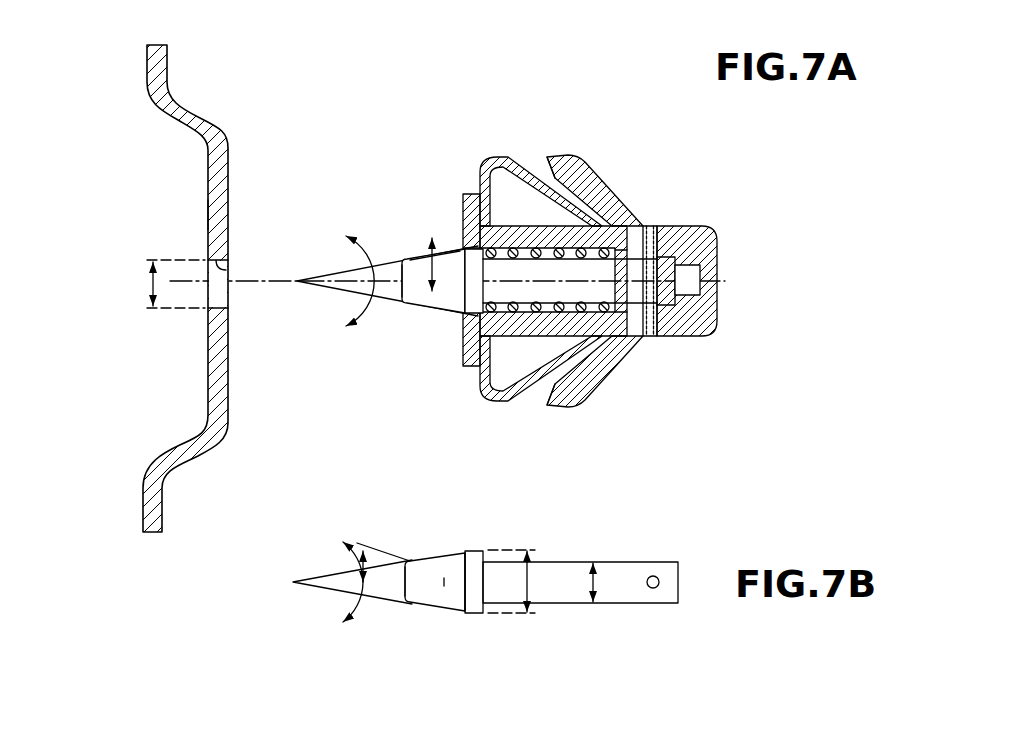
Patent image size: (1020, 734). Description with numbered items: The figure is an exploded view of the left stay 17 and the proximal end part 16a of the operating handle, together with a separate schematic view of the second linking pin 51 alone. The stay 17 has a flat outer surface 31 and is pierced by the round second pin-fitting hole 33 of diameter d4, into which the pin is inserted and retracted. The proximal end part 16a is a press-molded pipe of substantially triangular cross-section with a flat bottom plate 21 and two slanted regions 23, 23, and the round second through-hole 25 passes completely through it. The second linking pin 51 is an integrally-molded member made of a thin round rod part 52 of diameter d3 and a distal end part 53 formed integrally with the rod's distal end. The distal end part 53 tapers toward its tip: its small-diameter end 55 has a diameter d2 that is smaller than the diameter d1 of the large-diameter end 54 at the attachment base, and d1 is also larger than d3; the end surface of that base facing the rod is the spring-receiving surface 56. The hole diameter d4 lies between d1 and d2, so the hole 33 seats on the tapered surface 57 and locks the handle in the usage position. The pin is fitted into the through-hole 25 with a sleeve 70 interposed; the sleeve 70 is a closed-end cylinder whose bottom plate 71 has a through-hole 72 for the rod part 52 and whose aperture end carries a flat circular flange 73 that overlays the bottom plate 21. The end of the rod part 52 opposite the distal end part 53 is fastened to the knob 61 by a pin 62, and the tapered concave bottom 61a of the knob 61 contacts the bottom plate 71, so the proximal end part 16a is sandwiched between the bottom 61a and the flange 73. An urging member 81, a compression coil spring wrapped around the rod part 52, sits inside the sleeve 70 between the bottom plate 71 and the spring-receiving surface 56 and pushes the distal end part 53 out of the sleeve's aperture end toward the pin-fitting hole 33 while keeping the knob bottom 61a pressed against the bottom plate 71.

In FIG. 7A, the left stay 17 is at (206, 116).
In FIG. 7A, the surface of the left stay 31 is at (228, 202).
In FIG. 7A, the second pin-fitting hole 33 is at (228, 265).
In FIG. 7A, the diameter of the second pin-fitting hole d4 is at (160, 284).
In FIG. 7A, the flange 73 is at (464, 212).
In FIG. 7A, the left proximal end part 16a is at (497, 156).
In FIG. 7A, the bottom plate 21 is at (481, 185).
In FIG. 7A, the slanted regions 23 is at (535, 162).
In FIG. 7A, the second through-hole 25 is at (511, 160).
In FIG. 7A, the knob 61 is at (620, 180).
In FIG. 7A, the bottom of the knob 61a is at (586, 200).
In FIG. 7A, the bottom plate of the sleeve 71 is at (608, 352).
In FIG. 7A, the sleeve 70 is at (580, 392).
In FIG. 7A, the through-hole 72 is at (633, 325).
In FIG. 7A, the urging member 81 is at (648, 237).
In FIG. 7A, the pin 62 is at (705, 233).
In FIG. 7A, the second linking pin 51 is at (568, 286).
In FIG. 7B, the second linking pin 51 is at (485, 585).
In FIG. 7A, the rod part 52 is at (708, 330).
In FIG. 7B, the rod part 52 is at (558, 558).
In FIG. 7A, the distal end part 53 is at (452, 258).
In FIG. 7B, the distal end part 53 is at (464, 548).
In FIG. 7A, the large-diameter end 54 is at (466, 310).
In FIG. 7B, the large-diameter end 54 is at (478, 612).
In FIG. 7A, the small-diameter end 55 is at (406, 295).
In FIG. 7B, the small-diameter end 55 is at (413, 600).
In FIG. 7A, the spring-receiving surface 56 is at (472, 325).
In FIG. 7B, the spring-receiving surface 56 is at (482, 612).
In FIG. 7A, the tapered surface 57 is at (428, 300).
In FIG. 7B, the tapered surface 57 is at (444, 587).
In FIG. 7A, the diameter of the large-diameter end d1 is at (405, 266).
In FIG. 7B, the diameter of the large-diameter end d1 is at (532, 603).
In FIG. 7B, the diameter of the small-diameter end d2 is at (380, 580).
In FIG. 7B, the diameter of the rod part d3 is at (600, 603).